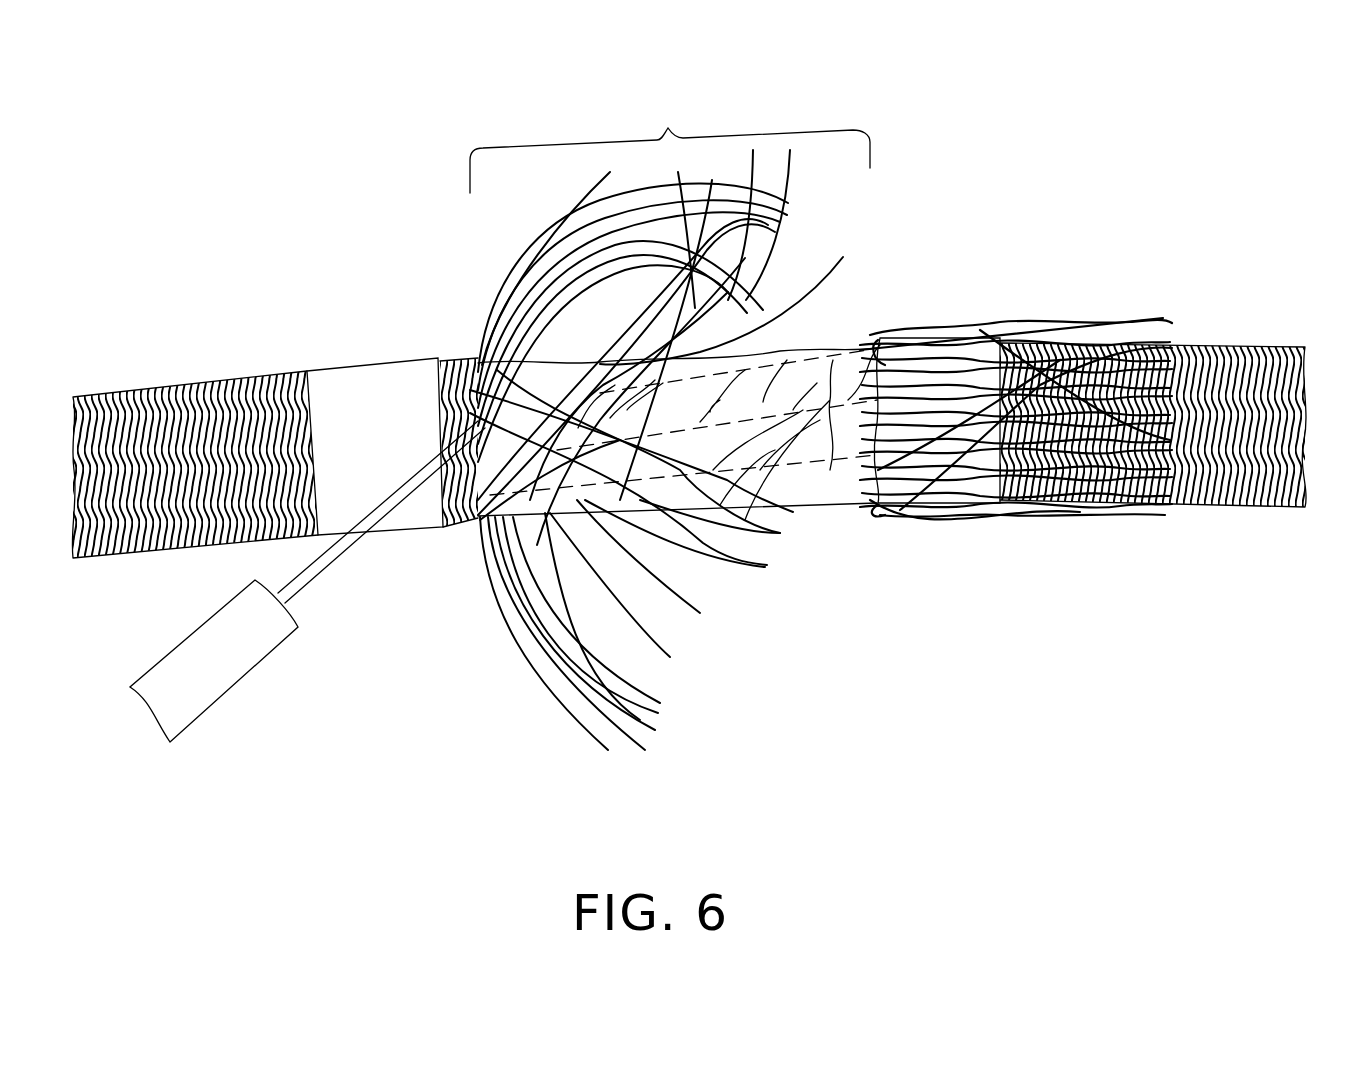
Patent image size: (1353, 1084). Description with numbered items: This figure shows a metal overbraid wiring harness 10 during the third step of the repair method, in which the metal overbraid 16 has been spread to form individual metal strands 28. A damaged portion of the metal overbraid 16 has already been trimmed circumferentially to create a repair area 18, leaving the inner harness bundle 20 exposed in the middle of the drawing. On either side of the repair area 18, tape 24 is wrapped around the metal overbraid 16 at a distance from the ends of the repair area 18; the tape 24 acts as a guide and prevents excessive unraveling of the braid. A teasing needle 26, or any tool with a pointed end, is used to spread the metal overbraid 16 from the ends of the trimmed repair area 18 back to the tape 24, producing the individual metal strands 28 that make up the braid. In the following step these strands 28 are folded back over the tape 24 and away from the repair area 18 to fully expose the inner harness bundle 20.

The metal overbraid wiring harness 10 is at (185, 164).
The metal overbraid 16 is at (185, 383).
The repair area 18 is at (668, 128).
The inner harness bundle 20 is at (830, 485).
The tape 24 is at (368, 375).
The teasing needle 26 is at (247, 660).
The individual metal strands 28 is at (503, 293).